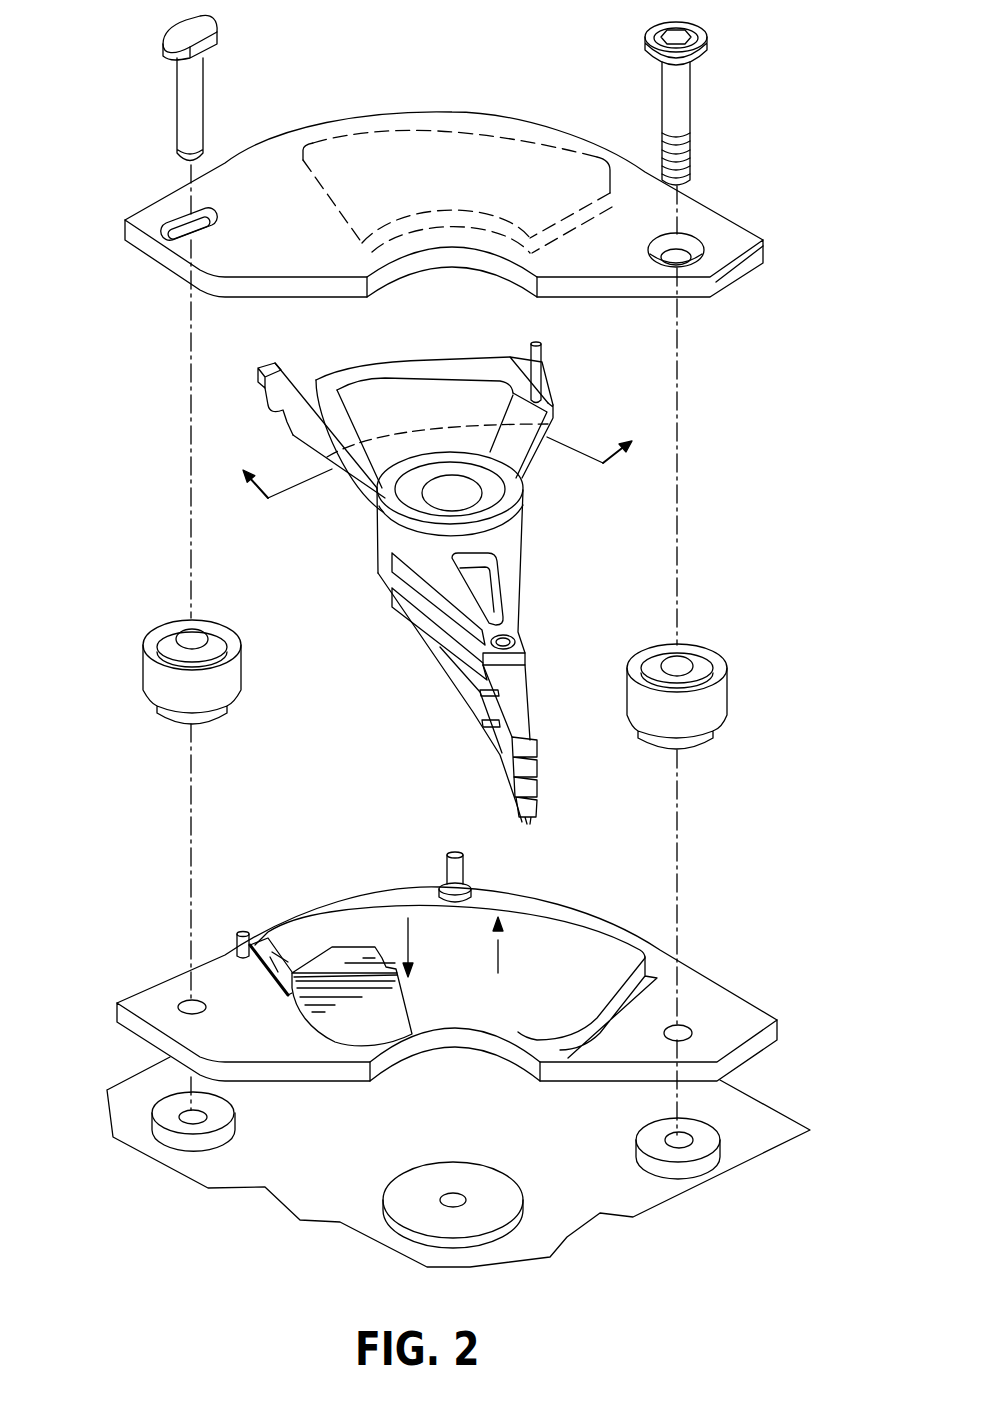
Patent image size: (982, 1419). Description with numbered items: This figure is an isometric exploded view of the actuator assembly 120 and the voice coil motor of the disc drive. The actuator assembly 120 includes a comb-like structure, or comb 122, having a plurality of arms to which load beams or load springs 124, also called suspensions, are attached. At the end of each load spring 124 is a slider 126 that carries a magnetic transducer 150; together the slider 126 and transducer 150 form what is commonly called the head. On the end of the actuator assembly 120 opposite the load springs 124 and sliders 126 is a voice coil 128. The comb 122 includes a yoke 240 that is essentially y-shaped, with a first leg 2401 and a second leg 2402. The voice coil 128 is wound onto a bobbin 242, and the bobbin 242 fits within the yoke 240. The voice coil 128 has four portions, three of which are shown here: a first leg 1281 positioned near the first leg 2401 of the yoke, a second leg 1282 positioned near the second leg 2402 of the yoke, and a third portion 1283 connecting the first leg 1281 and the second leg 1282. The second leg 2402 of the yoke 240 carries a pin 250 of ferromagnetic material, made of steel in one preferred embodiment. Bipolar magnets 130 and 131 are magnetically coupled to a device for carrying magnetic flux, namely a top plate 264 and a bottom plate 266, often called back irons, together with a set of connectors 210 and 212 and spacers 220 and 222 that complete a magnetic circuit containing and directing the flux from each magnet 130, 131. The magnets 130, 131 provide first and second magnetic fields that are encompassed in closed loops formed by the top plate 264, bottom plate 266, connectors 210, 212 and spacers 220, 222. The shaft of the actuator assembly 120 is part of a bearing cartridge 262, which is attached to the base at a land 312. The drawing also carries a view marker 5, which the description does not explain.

The actuator assembly 120 is at (466, 638).
The comb 122 is at (520, 571).
The load spring 124 is at (523, 692).
The slider 126 is at (538, 744).
The voice coil 128 is at (410, 421).
The first leg of the voice coil 1281 is at (270, 434).
The second leg of the voice coil 1282 is at (550, 394).
The third portion of the voice coil 1283 is at (404, 365).
The magnet 130 is at (348, 1040).
The magnet 131 is at (473, 153).
The magnetic transducer 150 is at (537, 762).
The connector 210 is at (177, 98).
The connector 212 is at (694, 97).
The spacer 220 is at (243, 667).
The spacer 222 is at (728, 692).
The yoke 240 is at (536, 462).
The first leg of the yoke 2401 is at (332, 467).
The second leg of the yoke 2402 is at (540, 415).
The bobbin 242 is at (388, 385).
The pin 250 is at (541, 360).
The bearing cartridge 262 is at (494, 497).
The top plate 264 is at (740, 283).
The bottom plate 266 is at (466, 993).
The land 312 is at (492, 1177).
The section view indicator 5 is at (435, 447).